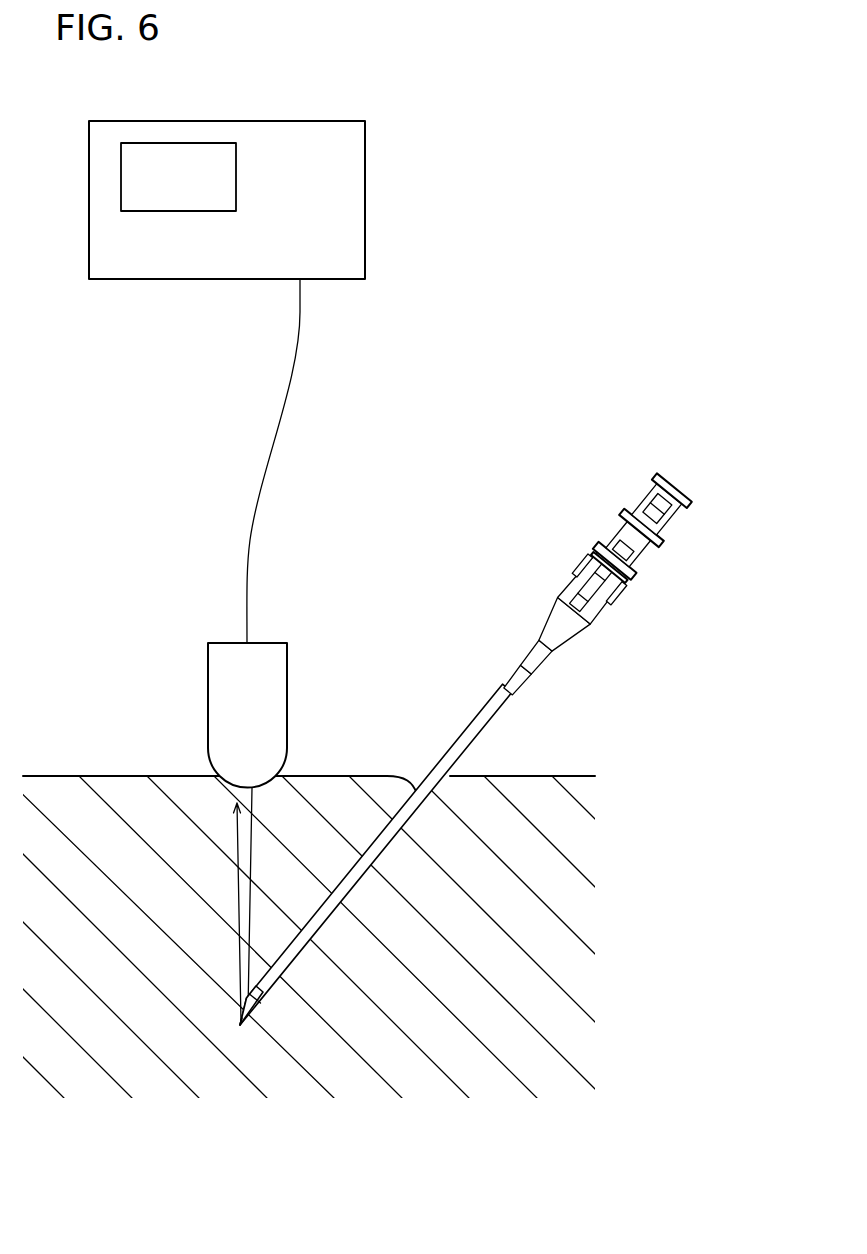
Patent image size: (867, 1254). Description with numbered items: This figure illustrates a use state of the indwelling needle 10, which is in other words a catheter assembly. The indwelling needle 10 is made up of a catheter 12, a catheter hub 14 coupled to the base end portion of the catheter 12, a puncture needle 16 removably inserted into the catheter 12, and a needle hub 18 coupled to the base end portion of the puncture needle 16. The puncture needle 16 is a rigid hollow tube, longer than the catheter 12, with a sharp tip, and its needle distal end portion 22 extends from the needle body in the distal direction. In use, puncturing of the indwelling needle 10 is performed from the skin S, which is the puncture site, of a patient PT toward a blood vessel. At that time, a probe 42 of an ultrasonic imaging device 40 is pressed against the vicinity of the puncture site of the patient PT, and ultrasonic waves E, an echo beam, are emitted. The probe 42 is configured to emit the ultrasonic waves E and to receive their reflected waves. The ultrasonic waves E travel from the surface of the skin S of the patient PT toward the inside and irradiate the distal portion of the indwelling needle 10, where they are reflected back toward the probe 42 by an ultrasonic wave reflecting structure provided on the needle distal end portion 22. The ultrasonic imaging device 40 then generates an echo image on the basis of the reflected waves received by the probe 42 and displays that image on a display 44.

The indwelling needle 10 is at (440, 765).
The catheter 12 is at (448, 762).
The catheter hub 14 is at (565, 615).
The puncture needle 16 is at (261, 1017).
The needle hub 18 is at (640, 550).
The needle distal end portion 22 is at (240, 1018).
The ultrasonic imaging device 40 is at (227, 168).
The probe 42 is at (230, 716).
The display 44 is at (165, 153).
The patient PT is at (297, 912).
The skin S is at (117, 775).
The ultrasonic waves E is at (253, 873).